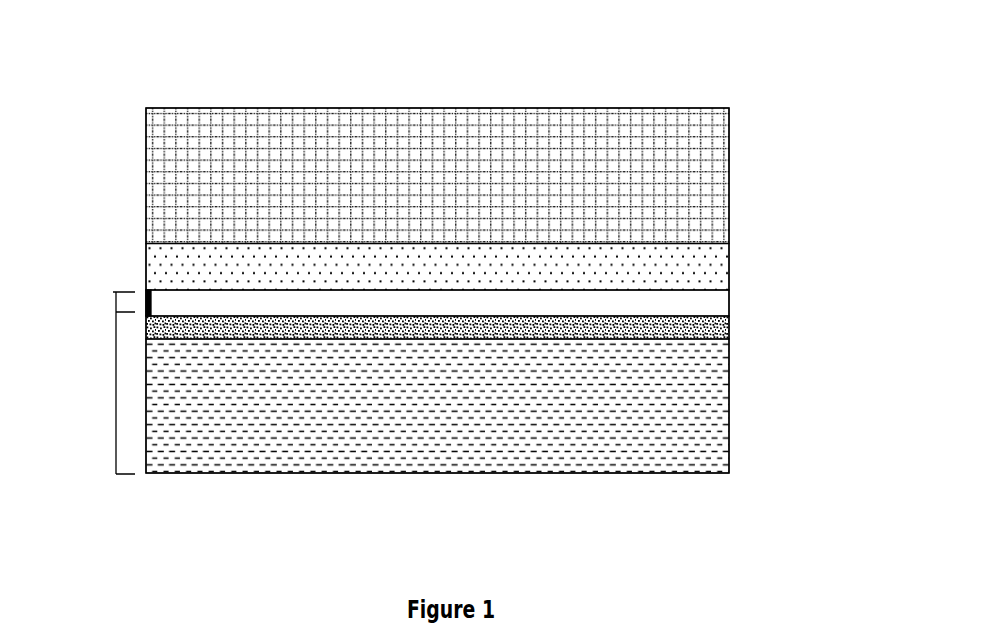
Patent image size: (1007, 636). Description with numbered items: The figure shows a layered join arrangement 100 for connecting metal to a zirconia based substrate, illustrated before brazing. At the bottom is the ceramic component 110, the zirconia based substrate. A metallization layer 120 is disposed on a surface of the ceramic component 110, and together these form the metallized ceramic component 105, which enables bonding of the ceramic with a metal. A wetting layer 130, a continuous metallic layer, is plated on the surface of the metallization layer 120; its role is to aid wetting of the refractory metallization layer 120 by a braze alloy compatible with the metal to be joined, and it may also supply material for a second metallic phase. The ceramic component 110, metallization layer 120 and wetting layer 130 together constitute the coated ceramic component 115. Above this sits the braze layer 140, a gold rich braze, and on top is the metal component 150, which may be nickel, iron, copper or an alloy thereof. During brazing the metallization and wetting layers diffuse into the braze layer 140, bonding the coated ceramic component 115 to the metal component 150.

The multilayer structure 100 is at (684, 87).
The metallized ceramic component 105 is at (116, 443).
The ceramic component 110 is at (728, 418).
The coated ceramic component 115 is at (113, 293).
The metallization layer 120 is at (728, 333).
The wetting layer 130 is at (728, 312).
The braze layer 140 is at (728, 250).
The metal component 150 is at (720, 155).